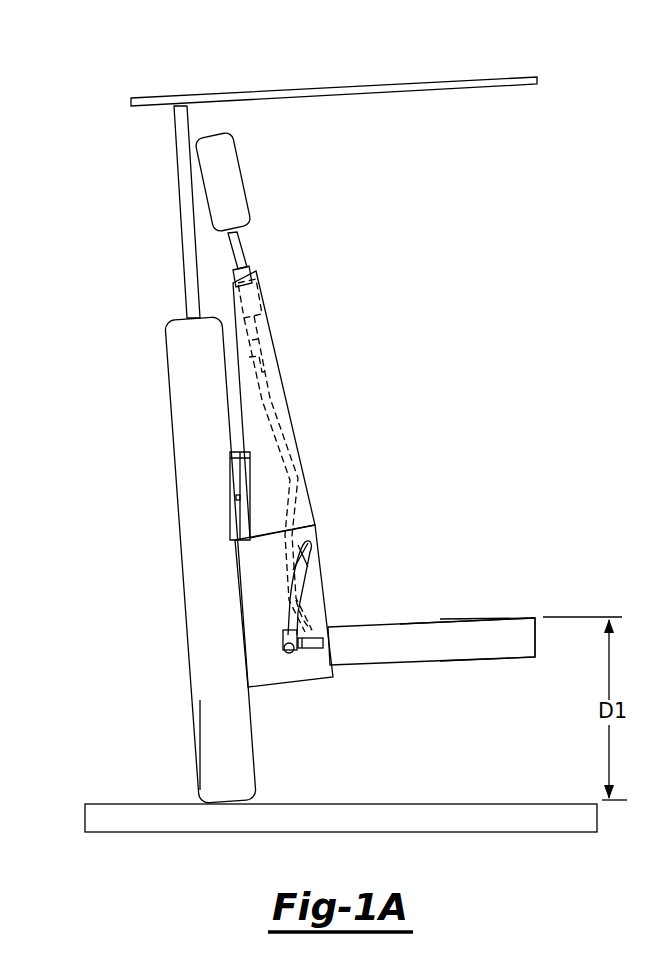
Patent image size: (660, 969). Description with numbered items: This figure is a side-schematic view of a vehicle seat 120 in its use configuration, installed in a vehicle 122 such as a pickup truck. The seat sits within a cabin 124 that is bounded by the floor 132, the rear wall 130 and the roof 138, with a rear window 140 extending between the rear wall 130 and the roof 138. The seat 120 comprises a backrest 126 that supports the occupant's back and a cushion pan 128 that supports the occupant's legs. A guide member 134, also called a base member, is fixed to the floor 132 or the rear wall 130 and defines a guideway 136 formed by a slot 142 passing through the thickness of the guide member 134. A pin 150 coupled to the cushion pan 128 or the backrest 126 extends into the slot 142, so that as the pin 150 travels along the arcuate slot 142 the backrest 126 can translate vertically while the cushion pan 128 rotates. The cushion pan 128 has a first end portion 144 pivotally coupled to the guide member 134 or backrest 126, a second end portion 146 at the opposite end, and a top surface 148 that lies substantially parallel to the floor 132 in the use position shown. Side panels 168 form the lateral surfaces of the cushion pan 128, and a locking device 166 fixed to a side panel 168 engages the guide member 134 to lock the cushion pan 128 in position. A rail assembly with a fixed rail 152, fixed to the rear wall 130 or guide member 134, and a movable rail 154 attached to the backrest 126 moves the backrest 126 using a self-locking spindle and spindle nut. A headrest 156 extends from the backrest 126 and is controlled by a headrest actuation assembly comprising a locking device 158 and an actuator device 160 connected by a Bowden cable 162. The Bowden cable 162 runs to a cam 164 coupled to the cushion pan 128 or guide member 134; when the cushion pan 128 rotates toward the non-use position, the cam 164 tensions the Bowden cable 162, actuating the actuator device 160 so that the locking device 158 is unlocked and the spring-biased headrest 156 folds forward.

The vehicle seat 120 is at (416, 234).
The vehicle 122 is at (106, 67).
The cabin 124 is at (556, 141).
The backrest 126 is at (277, 390).
The cushion pan 128 is at (431, 680).
The rear wall 130 is at (222, 703).
The floor 132 is at (142, 813).
The guide member 134 is at (282, 673).
The guideway 136 is at (198, 588).
The roof 138 is at (228, 95).
The rear window 140 is at (183, 151).
The slot 142 is at (290, 608).
The first end portion 144 is at (292, 640).
The second end portion 146 is at (510, 633).
The top surface 148 is at (460, 617).
The pin 150 is at (285, 652).
The fixed rail 152 is at (237, 470).
The movable rail 154 is at (243, 482).
The headrest 156 is at (230, 177).
The locking device 158 is at (262, 293).
The actuator device 160 is at (280, 358).
The Bowden cable 162 is at (283, 443).
The cam 164 is at (327, 622).
The locking device 166 is at (312, 652).
The side panel 168 is at (438, 643).